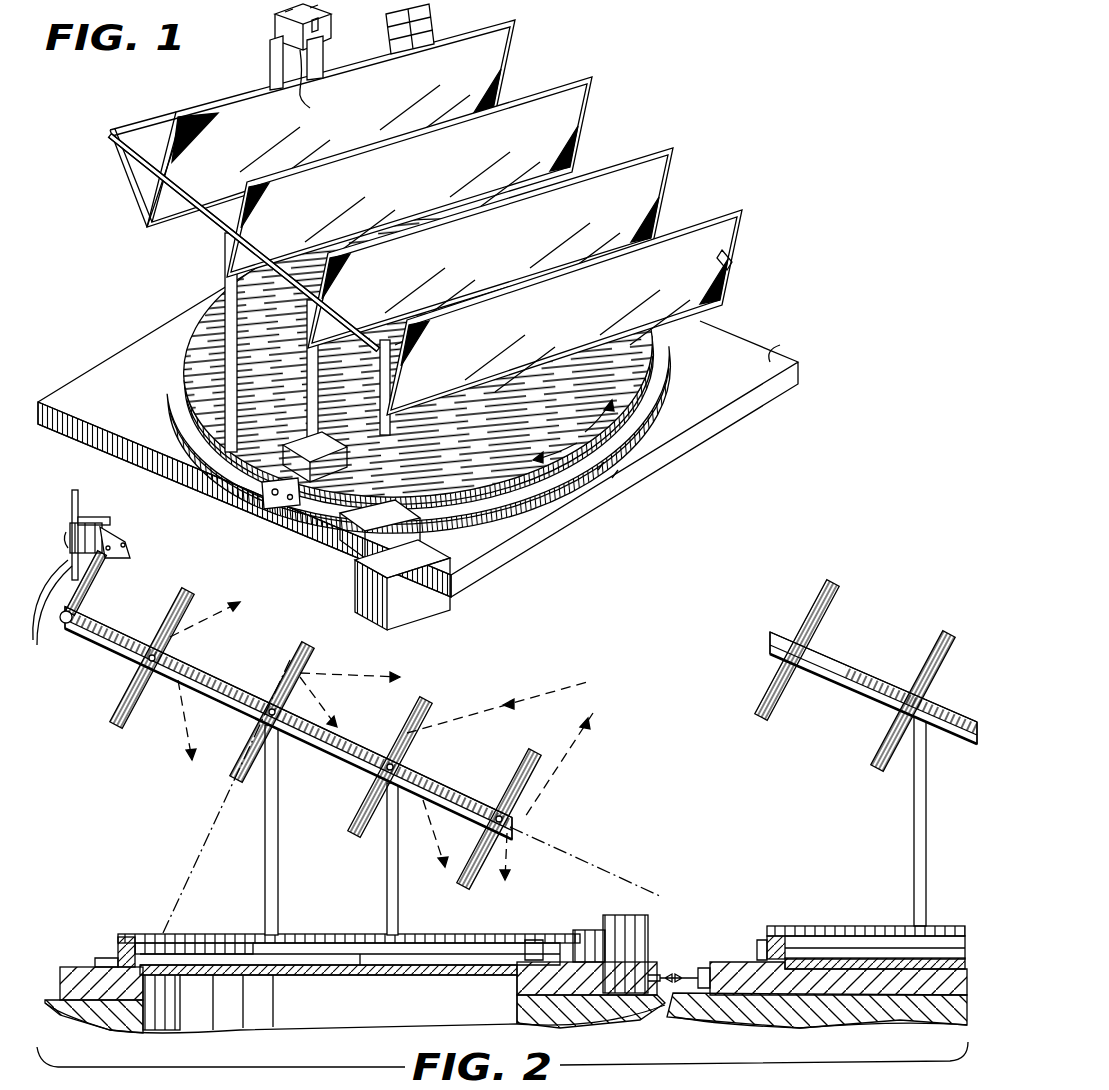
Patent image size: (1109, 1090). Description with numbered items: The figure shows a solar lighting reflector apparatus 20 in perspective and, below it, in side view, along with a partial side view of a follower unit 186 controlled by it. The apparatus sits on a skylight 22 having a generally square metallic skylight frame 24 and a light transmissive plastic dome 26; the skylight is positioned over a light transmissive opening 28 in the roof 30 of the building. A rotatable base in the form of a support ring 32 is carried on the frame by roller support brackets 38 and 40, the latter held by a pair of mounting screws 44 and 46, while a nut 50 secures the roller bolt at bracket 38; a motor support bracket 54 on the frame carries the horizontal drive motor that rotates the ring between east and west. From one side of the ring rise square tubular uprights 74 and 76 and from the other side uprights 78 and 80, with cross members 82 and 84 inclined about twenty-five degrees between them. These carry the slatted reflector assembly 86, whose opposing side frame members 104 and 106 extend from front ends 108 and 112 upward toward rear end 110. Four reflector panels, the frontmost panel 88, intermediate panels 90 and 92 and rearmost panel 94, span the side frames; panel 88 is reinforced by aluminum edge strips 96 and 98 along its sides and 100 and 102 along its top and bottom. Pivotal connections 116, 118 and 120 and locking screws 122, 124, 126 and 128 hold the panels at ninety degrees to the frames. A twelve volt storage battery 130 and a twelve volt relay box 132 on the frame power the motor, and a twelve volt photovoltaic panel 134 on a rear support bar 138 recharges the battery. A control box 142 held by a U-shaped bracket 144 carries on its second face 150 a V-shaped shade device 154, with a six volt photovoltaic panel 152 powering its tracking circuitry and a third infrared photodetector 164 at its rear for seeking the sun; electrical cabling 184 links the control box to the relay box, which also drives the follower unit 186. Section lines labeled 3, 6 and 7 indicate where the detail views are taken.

In FIG. 1, the solar lighting reflector apparatus 20 is at (762, 318).
In FIG. 2, the solar lighting reflector apparatus 20 is at (167, 905).
In FIG. 1, the skylight 22 is at (780, 340).
In FIG. 2, the skylight 22 is at (290, 985).
In FIG. 1, the skylight frame 24 is at (760, 385).
In FIG. 2, the skylight frame 24 is at (80, 980).
In FIG. 1, the light transmissive plastic dome 26 is at (785, 355).
In FIG. 2, the light transmissive plastic dome 26 is at (410, 977).
In FIG. 2, the light transmissive opening 28 is at (365, 1028).
In FIG. 2, the roof 30 is at (610, 1005).
In FIG. 1, the support ring 32 is at (437, 363).
In FIG. 2, the support ring 32 is at (128, 935).
In FIG. 1, the roller support bracket 38 is at (268, 500).
In FIG. 1, the roller support bracket 40 is at (622, 470).
In FIG. 1, the mounting screw 44 is at (604, 490).
In FIG. 1, the mounting screw 46 is at (650, 468).
In FIG. 1, the nut 50 is at (285, 502).
In FIG. 1, the motor support bracket 54 is at (348, 458).
In FIG. 1, the square tubular upright 74 is at (238, 405).
In FIG. 2, the square tubular upright 74 is at (278, 908).
In FIG. 1, the square tubular upright 76 is at (318, 383).
In FIG. 2, the square tubular upright 76 is at (387, 900).
In FIG. 1, the square tubular upright 78 is at (590, 125).
In FIG. 1, the square tubular upright 80 is at (668, 205).
In FIG. 1, the cross member 82 is at (285, 295).
In FIG. 2, the cross member 82 is at (350, 770).
In FIG. 1, the cross member 84 is at (600, 145).
In FIG. 1, the slatted reflector assembly 86 is at (588, 62).
In FIG. 1, the frontmost reflector panel 88 is at (735, 225).
In FIG. 2, the frontmost reflector panel 88 is at (540, 755).
In FIG. 1, the intermediate reflector panel 90 is at (672, 165).
In FIG. 2, the intermediate reflector panel 90 is at (422, 695).
In FIG. 1, the intermediate reflector panel 92 is at (590, 90).
In FIG. 2, the intermediate reflector panel 92 is at (302, 645).
In FIG. 1, the rearmost reflector panel 94 is at (510, 42).
In FIG. 2, the rearmost reflector panel 94 is at (188, 595).
In FIG. 1, the aluminum edge strip 96 is at (380, 410).
In FIG. 1, the aluminum edge strip 98 is at (698, 310).
In FIG. 1, the aluminum edge strip 100 is at (495, 280).
In FIG. 1, the aluminum edge strip 102 is at (510, 375).
In FIG. 1, the side frame member 104 is at (290, 260).
In FIG. 2, the side frame member 104 is at (218, 662).
In FIG. 1, the side frame member 106 is at (505, 72).
In FIG. 1, the front end of side frame member 104 108 is at (398, 355).
In FIG. 2, the front end of side frame member 104 108 is at (515, 828).
In FIG. 1, the rear end of side frame member 104 110 is at (115, 140).
In FIG. 2, the rear end of side frame member 104 110 is at (75, 625).
In FIG. 1, the front end of side frame member 106 112 is at (732, 262).
In FIG. 2, the pivotal connection 116 is at (385, 755).
In FIG. 2, the pivotal connection 118 is at (255, 715).
In FIG. 2, the pivotal connection 120 is at (165, 680).
In FIG. 2, the locking screw 122 is at (505, 800).
In FIG. 2, the locking screw 124 is at (390, 755).
In FIG. 2, the locking screw 126 is at (272, 690).
In FIG. 2, the locking screw 128 is at (165, 655).
In FIG. 1, the 12 volt storage battery 130 is at (445, 600).
In FIG. 2, the 12 volt storage battery 130 is at (645, 945).
In FIG. 1, the 12 volt relay box 132 is at (420, 535).
In FIG. 2, the 12 volt relay box 132 is at (583, 930).
In FIG. 1, the 12 volt photovoltaic panel 134 is at (434, 18).
In FIG. 2, the 12 volt photovoltaic panel 134 is at (75, 495).
In FIG. 1, the rear support bar 138 is at (162, 118).
In FIG. 1, the control box 142 is at (275, 18).
In FIG. 2, the control box 142 is at (70, 535).
In FIG. 1, the U-shaped bracket 144 is at (270, 72).
In FIG. 2, the U-shaped bracket 144 is at (98, 600).
In FIG. 1, the second forwardly directed face 150 is at (283, 55).
In FIG. 1, the 6 volt photovoltaic panel 152 is at (325, 22).
In FIG. 2, the 6 volt photovoltaic panel 152 is at (90, 517).
In FIG. 1, the V-shaped shade device 154 is at (331, 85).
In FIG. 2, the V-shaped shade device 154 is at (128, 545).
In FIG. 2, the third infrared photodetector 164 is at (68, 548).
In FIG. 2, the electrical cabling 184 is at (45, 650).
In FIG. 2, the follower unit 186 is at (890, 858).
In FIG. 2, the section line 3 is at (148, 528).
In FIG. 1, the section line 6 is at (100, 128).
In FIG. 1, the section line 7 is at (380, 33).